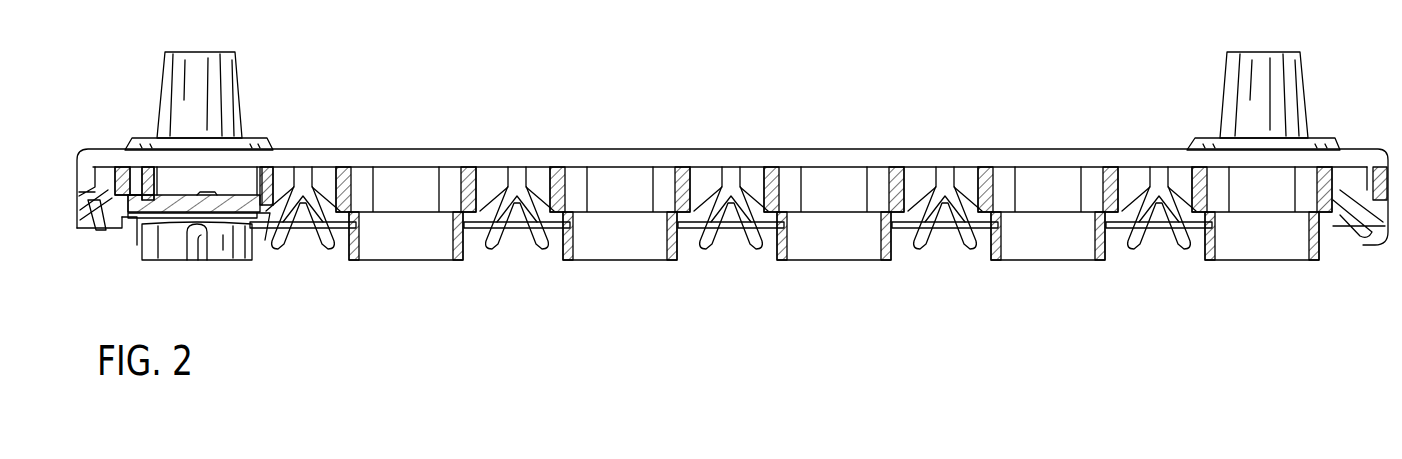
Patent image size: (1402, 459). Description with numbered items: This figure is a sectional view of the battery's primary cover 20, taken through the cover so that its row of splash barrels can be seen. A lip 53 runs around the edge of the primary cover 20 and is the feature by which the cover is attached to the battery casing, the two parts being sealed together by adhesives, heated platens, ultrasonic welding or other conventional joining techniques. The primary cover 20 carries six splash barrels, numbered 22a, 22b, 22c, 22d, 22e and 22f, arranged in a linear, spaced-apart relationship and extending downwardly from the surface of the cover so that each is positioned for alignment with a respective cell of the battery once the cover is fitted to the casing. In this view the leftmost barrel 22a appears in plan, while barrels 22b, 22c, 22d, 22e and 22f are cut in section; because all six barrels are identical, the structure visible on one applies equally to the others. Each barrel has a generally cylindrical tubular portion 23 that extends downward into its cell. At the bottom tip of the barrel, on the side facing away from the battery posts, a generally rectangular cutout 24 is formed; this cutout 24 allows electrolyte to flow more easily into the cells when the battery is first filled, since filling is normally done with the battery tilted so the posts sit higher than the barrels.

The primary cover 20 is at (515, 140).
The splash barrel 22a is at (140, 258).
The splash barrel 22b is at (348, 258).
The splash barrel 22c is at (563, 258).
The splash barrel 22d is at (777, 257).
The splash barrel 22e is at (982, 258).
The splash barrel 22f is at (1200, 257).
The cylindrical tubular portion 23 is at (235, 262).
The rectangular cutout 24 is at (198, 242).
The lip 53 is at (77, 230).